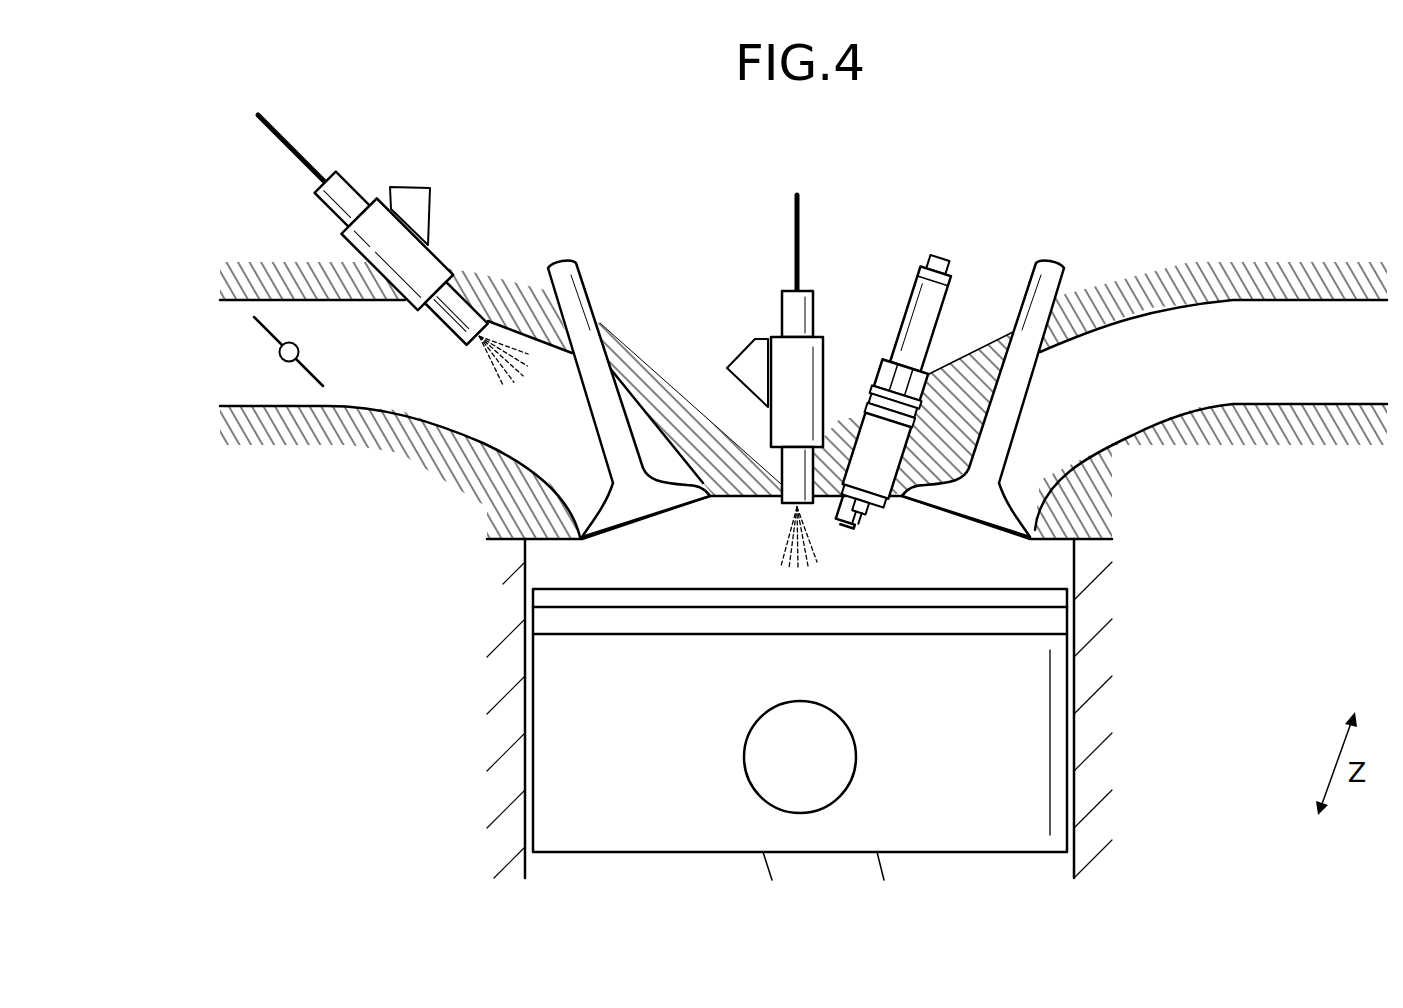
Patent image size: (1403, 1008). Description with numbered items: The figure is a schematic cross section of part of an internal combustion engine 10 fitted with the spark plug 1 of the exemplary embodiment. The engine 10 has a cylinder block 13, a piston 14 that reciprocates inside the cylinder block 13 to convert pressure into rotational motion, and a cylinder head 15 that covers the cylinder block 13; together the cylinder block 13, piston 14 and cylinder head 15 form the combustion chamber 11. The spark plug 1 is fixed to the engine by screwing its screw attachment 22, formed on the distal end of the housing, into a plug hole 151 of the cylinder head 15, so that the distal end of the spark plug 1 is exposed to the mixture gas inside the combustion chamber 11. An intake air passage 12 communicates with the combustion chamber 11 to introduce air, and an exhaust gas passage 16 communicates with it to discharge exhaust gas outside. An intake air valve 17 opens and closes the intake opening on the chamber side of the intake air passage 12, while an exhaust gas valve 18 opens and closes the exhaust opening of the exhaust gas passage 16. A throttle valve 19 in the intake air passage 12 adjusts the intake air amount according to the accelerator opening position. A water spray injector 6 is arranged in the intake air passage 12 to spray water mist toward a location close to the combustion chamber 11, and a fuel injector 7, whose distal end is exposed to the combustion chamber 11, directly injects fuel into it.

The spark plug 1 is at (869, 351).
The water spray injector 6 is at (290, 142).
The fuel injector 7 is at (786, 292).
The internal combustion engine 10 is at (1195, 797).
The combustion chamber 11 is at (1015, 565).
The intake air passage 12 is at (407, 373).
The cylinder block 13 is at (1095, 723).
The piston 14 is at (578, 712).
The cylinder head 15 is at (1235, 422).
The exhaust gas passage 16 is at (1255, 332).
The intake air valve 17 is at (583, 287).
The exhaust gas valve 18 is at (1047, 280).
The throttle valve 19 is at (281, 340).
The screw attachment 22 is at (865, 450).
The plug hole 151 is at (877, 370).